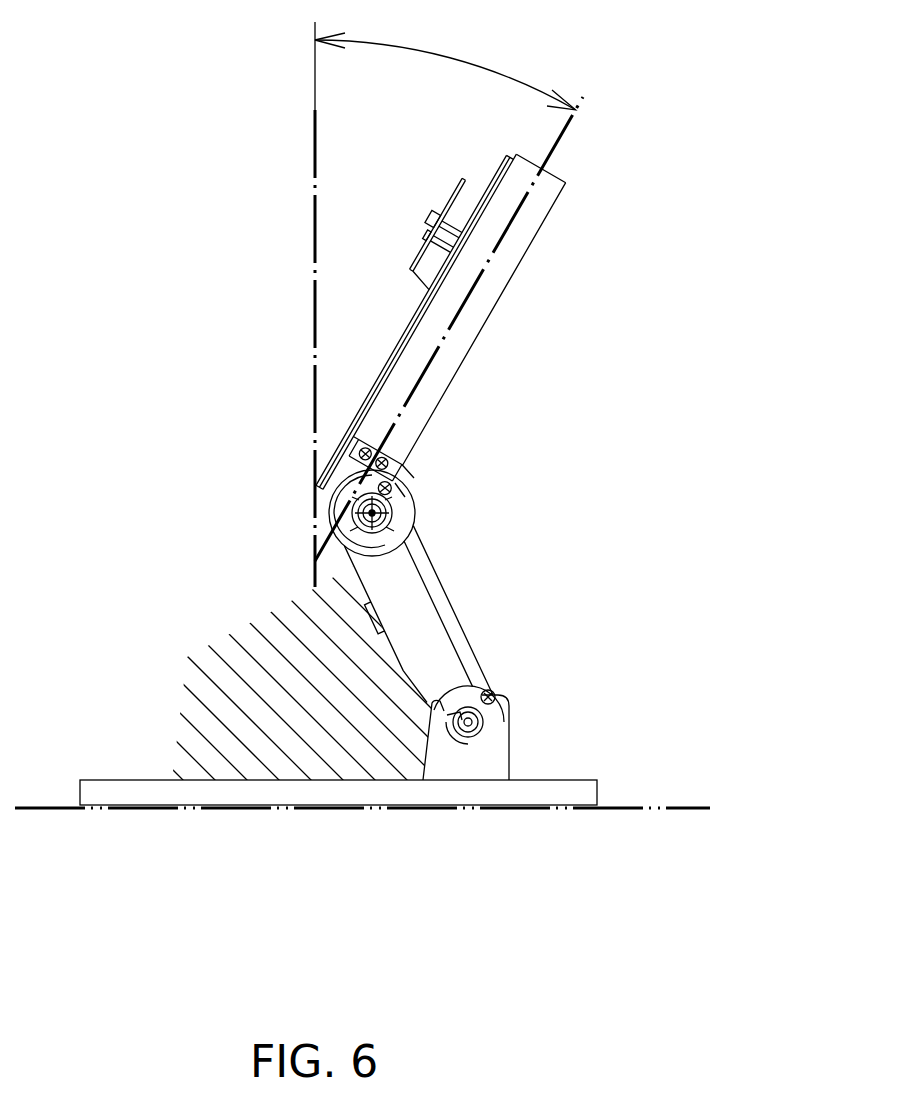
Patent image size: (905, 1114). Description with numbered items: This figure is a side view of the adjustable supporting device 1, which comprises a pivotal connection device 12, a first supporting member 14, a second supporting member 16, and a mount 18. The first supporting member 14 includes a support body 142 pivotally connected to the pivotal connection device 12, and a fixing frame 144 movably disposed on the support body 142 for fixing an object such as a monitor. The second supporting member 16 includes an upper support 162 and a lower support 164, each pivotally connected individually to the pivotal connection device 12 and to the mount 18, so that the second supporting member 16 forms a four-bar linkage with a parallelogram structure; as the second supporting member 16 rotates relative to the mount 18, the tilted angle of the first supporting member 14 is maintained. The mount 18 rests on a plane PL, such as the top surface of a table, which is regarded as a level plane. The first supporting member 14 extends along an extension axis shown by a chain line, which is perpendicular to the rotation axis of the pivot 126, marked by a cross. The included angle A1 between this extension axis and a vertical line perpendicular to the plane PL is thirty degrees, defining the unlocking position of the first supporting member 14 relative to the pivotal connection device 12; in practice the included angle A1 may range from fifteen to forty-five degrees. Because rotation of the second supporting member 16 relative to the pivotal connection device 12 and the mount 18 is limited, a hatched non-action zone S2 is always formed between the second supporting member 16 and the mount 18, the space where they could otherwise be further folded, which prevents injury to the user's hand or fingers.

The adjustable supporting device 1 is at (195, 133).
The pivotal connection device 12 is at (412, 493).
The pivot 126 is at (338, 531).
The first supporting member 14 is at (533, 245).
The support body 142 is at (473, 325).
The fixing frame 144 is at (480, 203).
The second supporting member 16 is at (508, 536).
The upper support 162 is at (438, 590).
The lower support 164 is at (448, 663).
The mount 18 is at (557, 790).
The included angle A1 is at (449, 304).
The non-action zone S2 is at (318, 706).
The plane PL is at (684, 804).